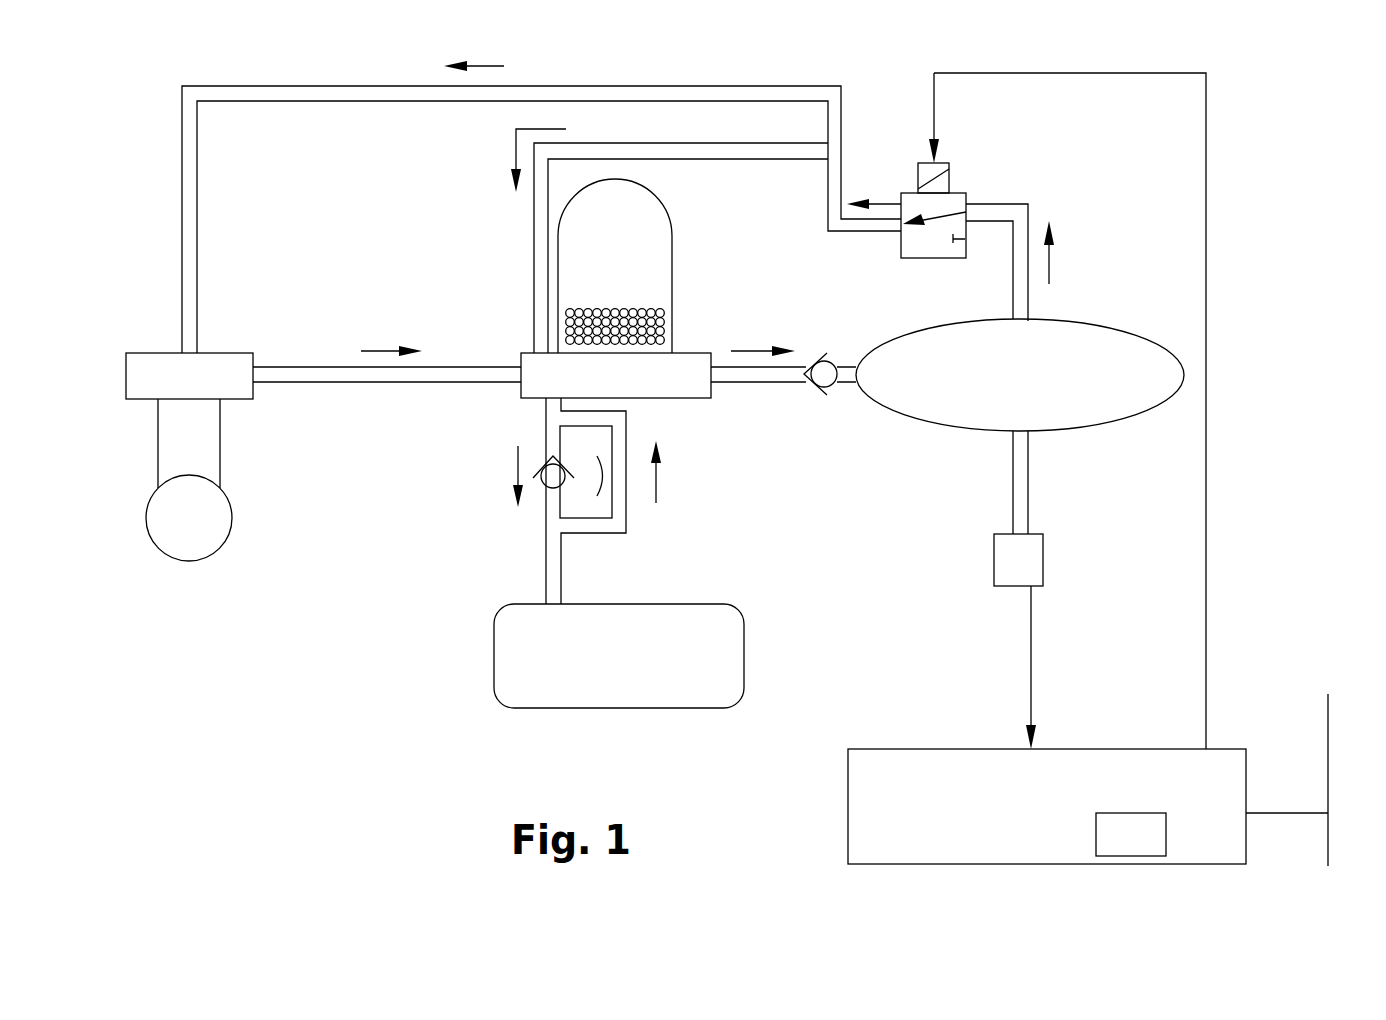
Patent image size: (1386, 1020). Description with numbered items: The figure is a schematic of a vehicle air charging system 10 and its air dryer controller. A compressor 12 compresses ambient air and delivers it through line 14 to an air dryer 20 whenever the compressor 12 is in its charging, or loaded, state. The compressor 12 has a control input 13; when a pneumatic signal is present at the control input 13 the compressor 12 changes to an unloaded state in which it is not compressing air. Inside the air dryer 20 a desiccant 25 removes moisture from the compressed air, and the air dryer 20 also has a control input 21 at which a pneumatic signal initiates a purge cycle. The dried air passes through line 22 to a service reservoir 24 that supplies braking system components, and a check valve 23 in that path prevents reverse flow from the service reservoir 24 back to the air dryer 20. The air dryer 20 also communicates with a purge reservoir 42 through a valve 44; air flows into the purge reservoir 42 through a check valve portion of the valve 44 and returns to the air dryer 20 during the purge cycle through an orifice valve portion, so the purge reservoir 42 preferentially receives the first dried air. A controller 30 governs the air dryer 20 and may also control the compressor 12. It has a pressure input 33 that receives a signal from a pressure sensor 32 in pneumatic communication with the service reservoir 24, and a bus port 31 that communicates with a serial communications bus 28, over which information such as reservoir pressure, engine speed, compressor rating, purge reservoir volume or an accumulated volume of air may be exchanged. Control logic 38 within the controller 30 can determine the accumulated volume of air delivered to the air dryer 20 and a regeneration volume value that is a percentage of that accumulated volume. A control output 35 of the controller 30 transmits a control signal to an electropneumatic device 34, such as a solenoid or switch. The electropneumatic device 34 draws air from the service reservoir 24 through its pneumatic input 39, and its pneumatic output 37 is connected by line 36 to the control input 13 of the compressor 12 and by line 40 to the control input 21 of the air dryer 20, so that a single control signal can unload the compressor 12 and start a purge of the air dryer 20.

The air charging system 10 is at (357, 683).
The compressor 12 is at (238, 544).
The control input 13 is at (190, 345).
The line 14 is at (323, 374).
The air dryer 20 is at (687, 265).
The control input 21 is at (526, 345).
The line 22 is at (755, 375).
The check valve 23 is at (816, 366).
The service reservoir 24 is at (1076, 313).
The desiccant 25 is at (657, 315).
The serial communications bus 28 is at (1320, 726).
The controller 30 is at (819, 805).
The bus port 31 is at (1238, 801).
The pressure sensor 32 is at (986, 550).
The pressure input 33 is at (1024, 741).
The electropneumatic device 34 is at (951, 184).
The control output 35 is at (1198, 741).
The line 36 is at (676, 78).
The pneumatic output 37 is at (895, 205).
The control logic 38 is at (1123, 805).
The pneumatic input 39 is at (958, 200).
The line 40 is at (526, 246).
The purge reservoir 42 is at (738, 653).
The valve 44 is at (632, 448).